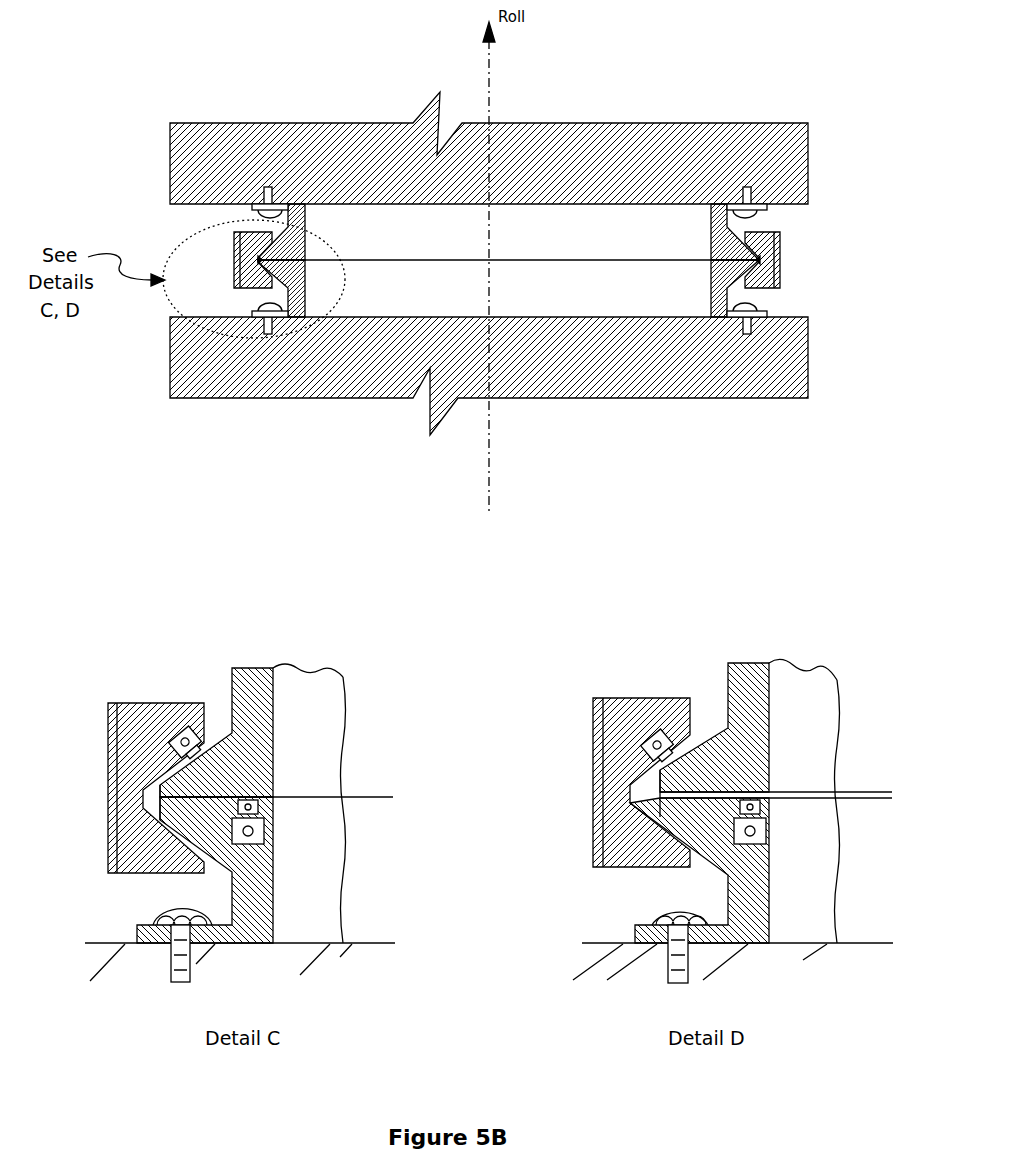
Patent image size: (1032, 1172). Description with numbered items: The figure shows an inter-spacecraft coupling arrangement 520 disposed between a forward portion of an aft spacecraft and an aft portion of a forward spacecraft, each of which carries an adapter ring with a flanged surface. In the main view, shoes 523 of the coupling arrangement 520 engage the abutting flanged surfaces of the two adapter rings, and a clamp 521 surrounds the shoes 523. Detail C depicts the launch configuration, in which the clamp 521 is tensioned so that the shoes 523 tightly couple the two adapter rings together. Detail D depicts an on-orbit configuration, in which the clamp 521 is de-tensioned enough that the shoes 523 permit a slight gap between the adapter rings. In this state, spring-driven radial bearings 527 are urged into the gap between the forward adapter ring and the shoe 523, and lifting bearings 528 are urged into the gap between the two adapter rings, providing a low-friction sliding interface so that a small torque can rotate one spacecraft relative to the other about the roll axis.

The inter-spacecraft coupling arrangement 520 is at (862, 188).
The clamp 521 is at (780, 242).
The shoe 523 is at (767, 272).
The radial bearing 527 is at (650, 730).
The lifting bearing 528 is at (770, 812).